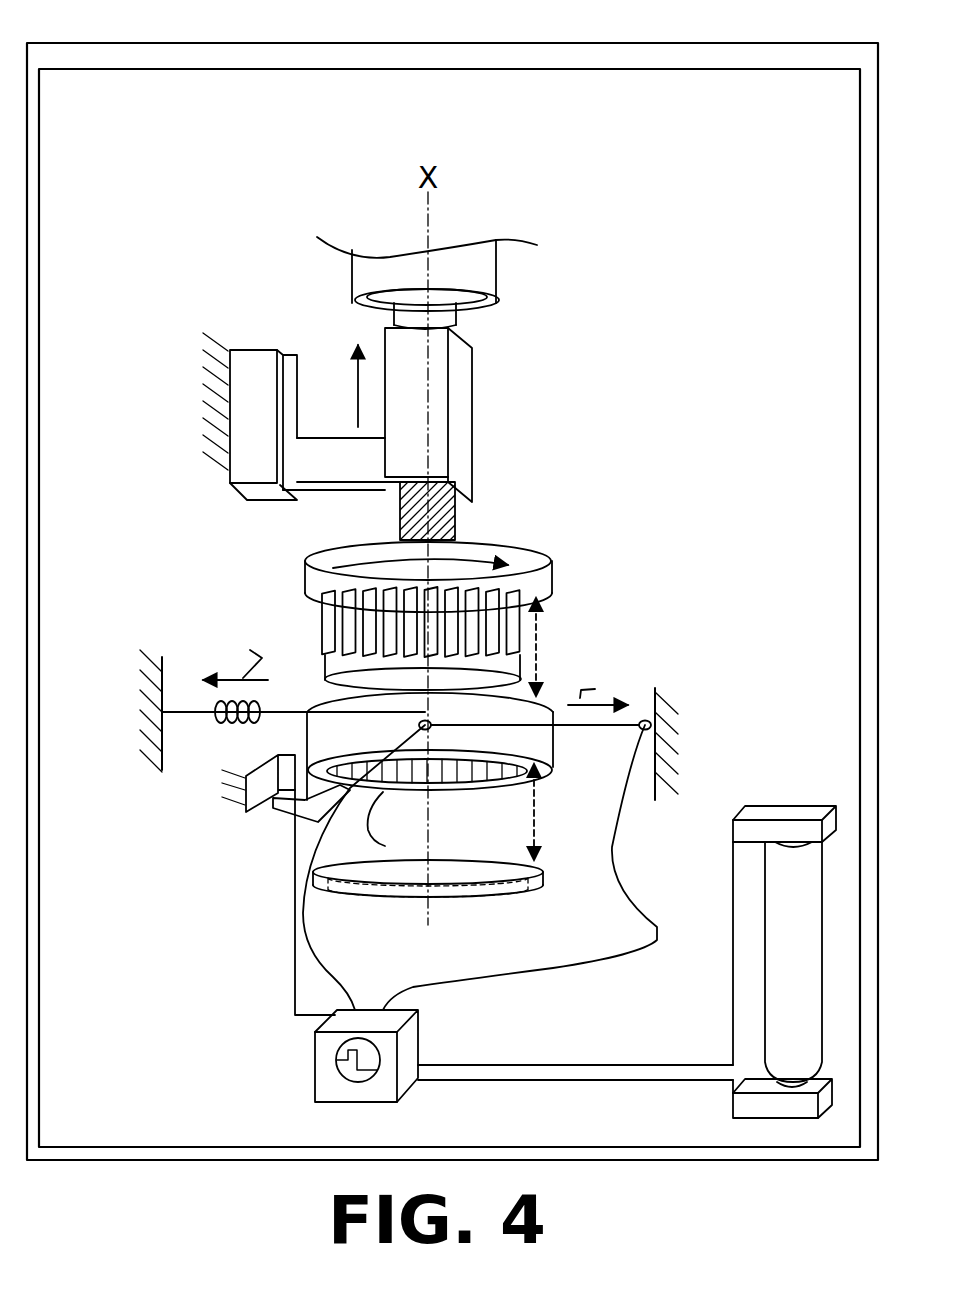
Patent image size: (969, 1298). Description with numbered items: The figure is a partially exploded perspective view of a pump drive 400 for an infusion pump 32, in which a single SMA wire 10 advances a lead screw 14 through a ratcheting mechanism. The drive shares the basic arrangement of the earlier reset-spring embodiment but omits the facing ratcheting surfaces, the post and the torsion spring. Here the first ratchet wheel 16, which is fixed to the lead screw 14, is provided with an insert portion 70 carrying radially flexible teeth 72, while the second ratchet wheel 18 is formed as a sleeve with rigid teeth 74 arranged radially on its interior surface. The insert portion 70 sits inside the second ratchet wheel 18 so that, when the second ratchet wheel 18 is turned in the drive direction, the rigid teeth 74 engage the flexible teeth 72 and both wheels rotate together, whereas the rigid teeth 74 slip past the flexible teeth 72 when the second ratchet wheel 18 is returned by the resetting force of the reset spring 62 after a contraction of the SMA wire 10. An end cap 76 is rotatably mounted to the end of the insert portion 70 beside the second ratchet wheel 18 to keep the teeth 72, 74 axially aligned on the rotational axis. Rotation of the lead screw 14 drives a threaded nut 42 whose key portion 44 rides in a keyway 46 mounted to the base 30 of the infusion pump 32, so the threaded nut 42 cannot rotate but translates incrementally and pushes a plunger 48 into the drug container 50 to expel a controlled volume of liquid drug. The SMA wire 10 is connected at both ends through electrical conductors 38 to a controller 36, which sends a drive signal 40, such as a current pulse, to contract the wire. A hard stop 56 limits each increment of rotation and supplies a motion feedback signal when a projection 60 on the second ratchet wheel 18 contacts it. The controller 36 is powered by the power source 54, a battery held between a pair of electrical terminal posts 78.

The SMA wire 10 is at (597, 727).
The lead screw 14 is at (455, 532).
The first ratchet wheel 16 is at (552, 583).
The second ratchet wheel 18 is at (556, 705).
The base 30 is at (90, 1129).
The infusion pump 32 is at (208, 43).
The controller 36 is at (484, 1044).
The electrical conductors 38 is at (477, 975).
The drive signal 40 is at (340, 1060).
The threaded nut 42 is at (475, 453).
The key portion 44 is at (323, 447).
The keyway 46 is at (250, 362).
The plunger 48 is at (457, 323).
The drug container 50 is at (488, 275).
The power source 54 is at (776, 977).
The hard stop 56 is at (260, 812).
The projection 60 is at (307, 790).
The reset spring 62 is at (190, 713).
The insert portion 70 is at (310, 631).
The flexible teeth 72 is at (312, 617).
The rigid teeth 74 is at (447, 786).
The end cap 76 is at (507, 898).
The electrical terminal posts 78 is at (803, 812).
The pump drive 400 is at (176, 226).